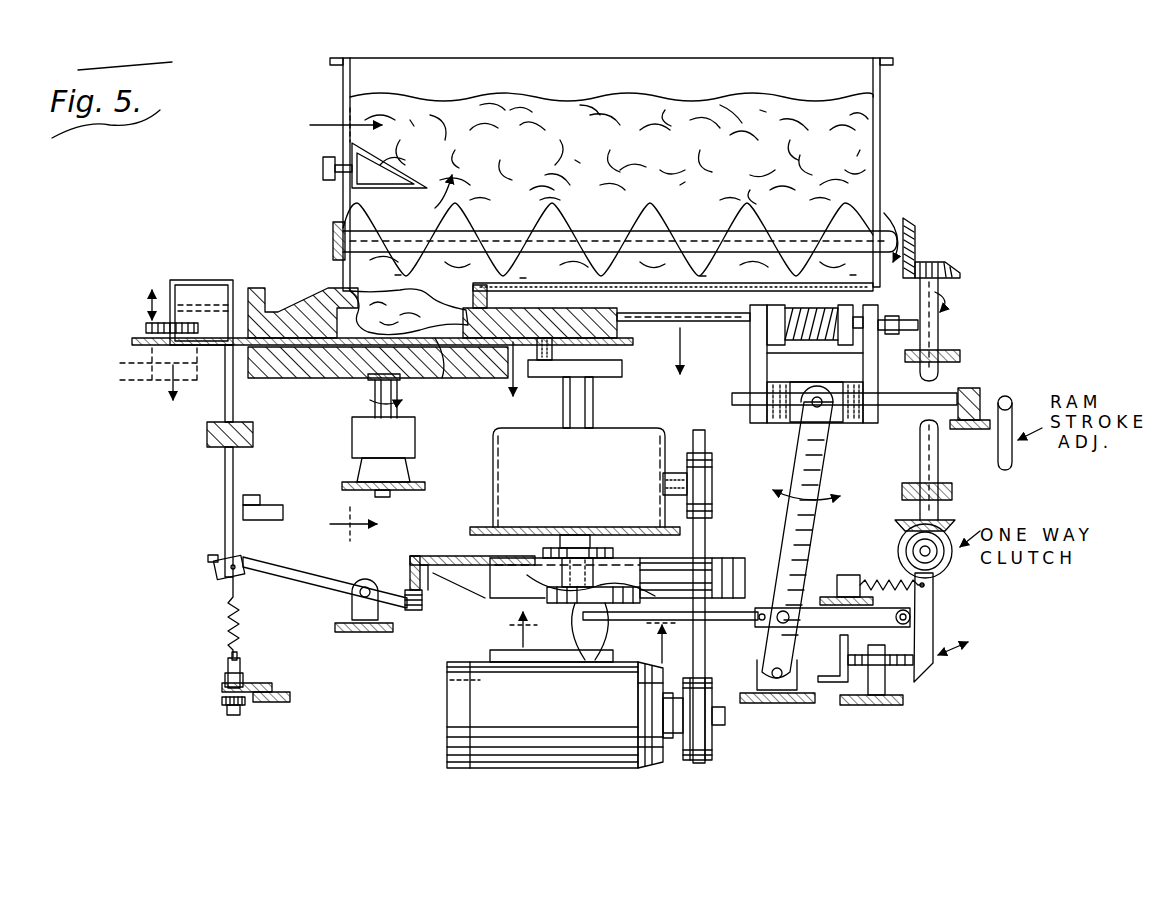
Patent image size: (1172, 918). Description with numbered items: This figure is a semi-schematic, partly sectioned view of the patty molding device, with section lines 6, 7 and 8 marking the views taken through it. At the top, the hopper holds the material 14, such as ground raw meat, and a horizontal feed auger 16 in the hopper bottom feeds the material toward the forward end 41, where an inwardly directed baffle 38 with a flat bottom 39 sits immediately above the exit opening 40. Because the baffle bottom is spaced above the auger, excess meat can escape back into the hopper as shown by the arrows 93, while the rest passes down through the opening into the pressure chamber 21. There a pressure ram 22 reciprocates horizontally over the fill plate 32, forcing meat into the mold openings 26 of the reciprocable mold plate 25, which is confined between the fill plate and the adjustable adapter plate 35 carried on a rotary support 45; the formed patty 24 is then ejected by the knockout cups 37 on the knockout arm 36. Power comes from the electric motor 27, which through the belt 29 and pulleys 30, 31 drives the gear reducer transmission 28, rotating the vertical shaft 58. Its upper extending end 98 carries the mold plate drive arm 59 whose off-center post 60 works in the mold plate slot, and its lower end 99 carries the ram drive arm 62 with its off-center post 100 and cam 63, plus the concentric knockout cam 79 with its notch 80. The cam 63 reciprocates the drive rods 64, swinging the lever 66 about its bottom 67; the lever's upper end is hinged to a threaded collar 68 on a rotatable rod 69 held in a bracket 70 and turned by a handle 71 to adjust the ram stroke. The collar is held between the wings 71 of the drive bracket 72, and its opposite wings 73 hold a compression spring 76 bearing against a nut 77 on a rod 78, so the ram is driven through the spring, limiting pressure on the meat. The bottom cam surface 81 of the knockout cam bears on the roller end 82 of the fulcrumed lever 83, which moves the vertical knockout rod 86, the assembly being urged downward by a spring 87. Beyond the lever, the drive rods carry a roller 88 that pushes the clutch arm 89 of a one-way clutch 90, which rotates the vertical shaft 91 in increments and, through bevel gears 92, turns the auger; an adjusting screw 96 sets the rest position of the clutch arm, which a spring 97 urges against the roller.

The section line FIG. 6 is at (329, 324).
The section line FIG. 7 is at (586, 641).
The line 8— 8 is at (584, 375).
The material 14 is at (830, 142).
The feed auger 16 is at (880, 240).
The pressure chamber 21 is at (442, 380).
The pressure ram 22 is at (598, 308).
The molded article or patty 24 is at (140, 345).
The mold plate 25 is at (242, 338).
The mold openings 26 is at (205, 370).
The electric motor 27 is at (530, 704).
The gear reducer transmission 28 is at (605, 490).
The belt 29 is at (706, 640).
The pulley 30 is at (713, 740).
The pulley 31 is at (714, 473).
The fill plate 32 is at (462, 305).
The adapter plate 35 is at (262, 376).
The knockout arm 36 is at (192, 278).
The knockout cups 37 is at (146, 328).
The baffle 38 is at (385, 170).
The flat bottom of baffle 39 is at (340, 175).
The exit opening 40 is at (485, 296).
The forward end of hopper 41 is at (335, 80).
The rotary support 45 is at (372, 398).
The vertical shaft 58 is at (598, 405).
The mold plate drive arm 59 is at (600, 404).
The off-center post 60 is at (540, 332).
The ram drive arm 62 is at (610, 622).
The cam 63 is at (610, 660).
The drive rods 64 is at (720, 560).
The lever 66 is at (806, 522).
The bottom of lever 67 is at (777, 680).
The threaded collar 68 is at (826, 420).
The rotatable rod 69 is at (903, 408).
The bracket 70 is at (975, 392).
The handle 71 is at (745, 406).
The drive bracket 72 is at (750, 350).
The wings 73 is at (750, 310).
The compression spring 76 is at (800, 345).
The nut 77 is at (845, 348).
The rod 78 is at (918, 326).
The knockout cam 79 is at (435, 556).
The notch 80 is at (430, 590).
The bottom cam surface 81 is at (470, 618).
The roller end 82 is at (418, 615).
The fulcrumed lever 83 is at (268, 572).
The knockout rod 86 is at (226, 458).
The spring 87 is at (228, 625).
The roller 88 is at (917, 604).
The clutch arm 89 is at (920, 636).
The one-way clutch 90 is at (948, 564).
The vertical shaft 91 is at (940, 462).
The bevel gears 92 is at (920, 262).
The arrows 93 is at (455, 171).
The adjusting screw 96 is at (900, 668).
The spring 97 is at (885, 580).
The upper extending end 98 is at (580, 380).
The lower end 99 is at (528, 579).
The off-center post 100 is at (640, 712).